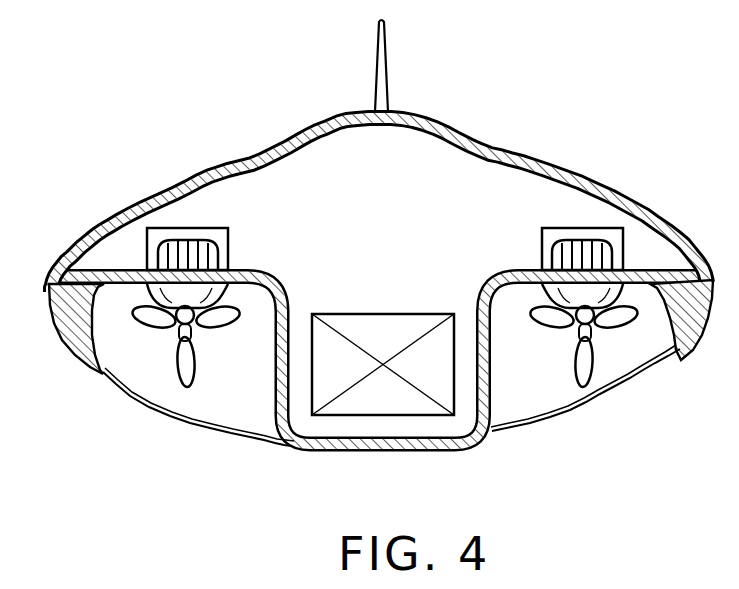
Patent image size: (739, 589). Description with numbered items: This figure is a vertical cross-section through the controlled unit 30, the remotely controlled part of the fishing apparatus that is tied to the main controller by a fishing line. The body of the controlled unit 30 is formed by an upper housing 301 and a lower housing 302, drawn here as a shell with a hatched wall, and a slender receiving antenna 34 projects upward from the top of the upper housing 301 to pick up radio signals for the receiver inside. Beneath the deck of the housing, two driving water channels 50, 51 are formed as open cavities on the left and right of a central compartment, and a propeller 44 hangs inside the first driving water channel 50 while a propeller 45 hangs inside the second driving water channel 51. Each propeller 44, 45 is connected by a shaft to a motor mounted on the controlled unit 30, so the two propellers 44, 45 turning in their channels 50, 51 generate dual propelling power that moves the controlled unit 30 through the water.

The controlled unit 30 is at (243, 120).
The upper housing 301 is at (525, 158).
The lower housing 302 is at (628, 383).
The receiving antenna 34 is at (386, 43).
The propeller 44 is at (178, 373).
The propeller 45 is at (597, 385).
The driving water channel 50 is at (228, 392).
The driving water channel 51 is at (545, 395).